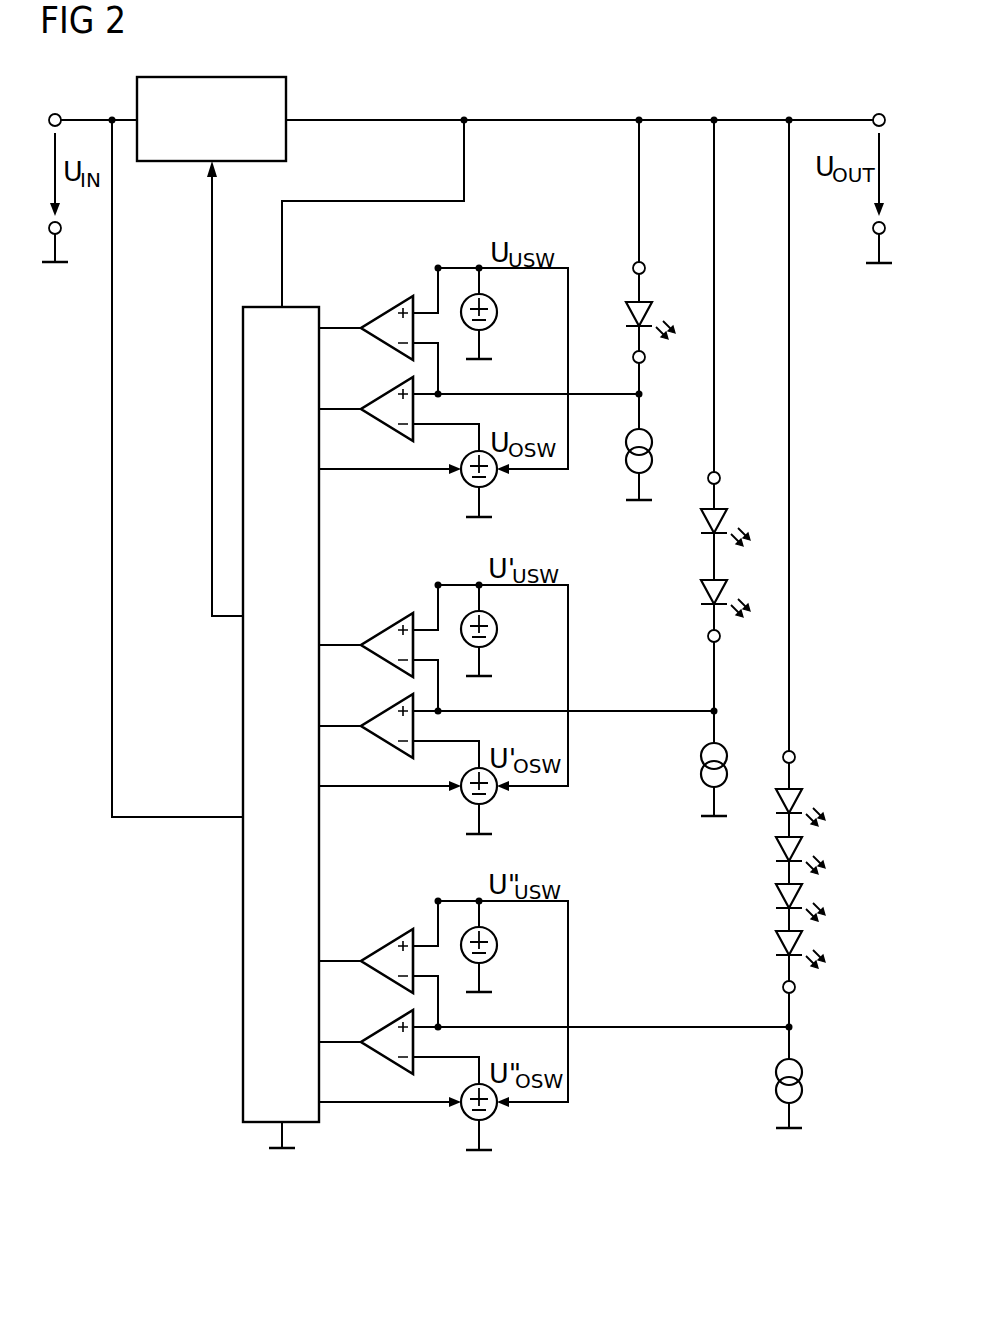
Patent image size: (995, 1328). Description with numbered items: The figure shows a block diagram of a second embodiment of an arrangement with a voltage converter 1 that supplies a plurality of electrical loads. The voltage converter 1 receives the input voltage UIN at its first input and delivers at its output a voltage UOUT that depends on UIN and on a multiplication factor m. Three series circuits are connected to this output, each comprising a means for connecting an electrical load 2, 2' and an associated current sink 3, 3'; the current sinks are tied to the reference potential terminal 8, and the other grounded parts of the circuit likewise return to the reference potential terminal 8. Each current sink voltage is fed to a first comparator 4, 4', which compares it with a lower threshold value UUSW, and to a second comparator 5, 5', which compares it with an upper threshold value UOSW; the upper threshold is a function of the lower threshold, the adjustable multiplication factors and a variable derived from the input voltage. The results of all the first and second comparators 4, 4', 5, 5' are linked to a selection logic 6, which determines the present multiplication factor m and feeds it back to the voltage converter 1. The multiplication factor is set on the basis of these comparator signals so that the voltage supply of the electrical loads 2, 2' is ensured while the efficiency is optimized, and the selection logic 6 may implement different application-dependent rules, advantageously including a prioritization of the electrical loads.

The voltage converter 1 is at (212, 77).
The electrical load 2 is at (633, 257).
The electrical load 2' is at (706, 415).
The current sink 3 is at (615, 447).
The current sink 3' is at (689, 763).
The first comparator 4 is at (382, 311).
The first comparator 4' is at (381, 628).
The second comparator 5 is at (382, 391).
The second comparator 5' is at (381, 708).
The selection logic 6 is at (243, 715).
The reference potential terminal 8 is at (58, 264).